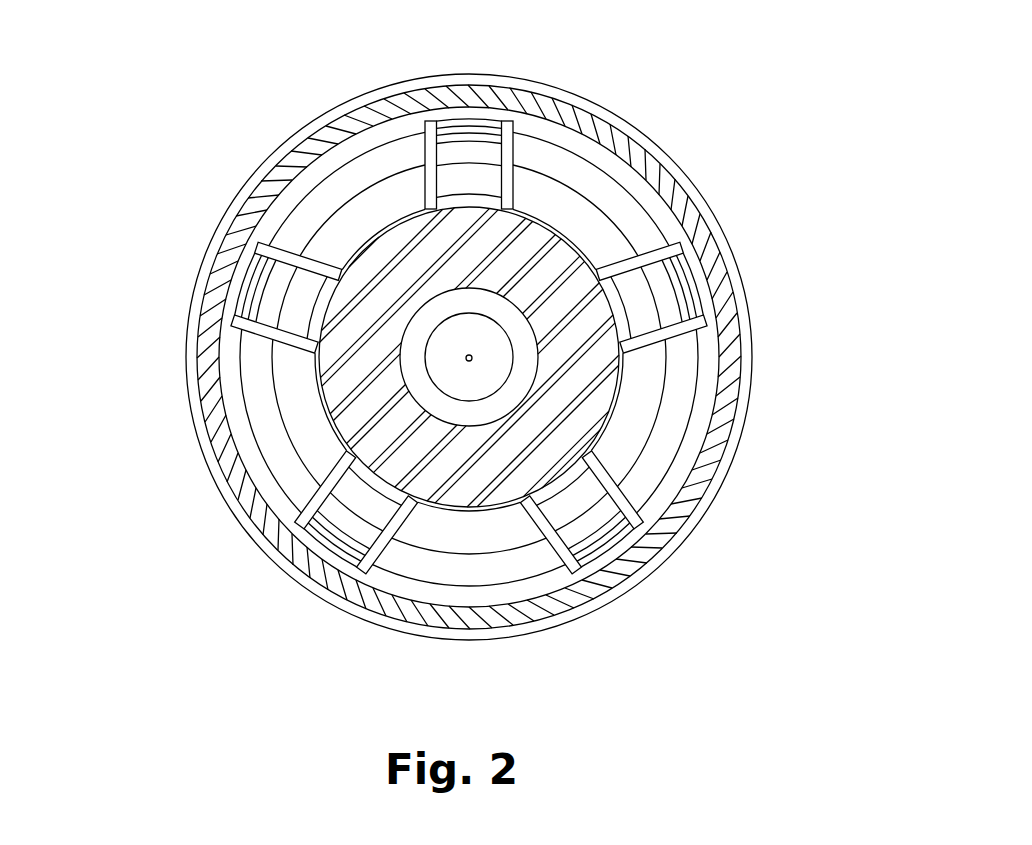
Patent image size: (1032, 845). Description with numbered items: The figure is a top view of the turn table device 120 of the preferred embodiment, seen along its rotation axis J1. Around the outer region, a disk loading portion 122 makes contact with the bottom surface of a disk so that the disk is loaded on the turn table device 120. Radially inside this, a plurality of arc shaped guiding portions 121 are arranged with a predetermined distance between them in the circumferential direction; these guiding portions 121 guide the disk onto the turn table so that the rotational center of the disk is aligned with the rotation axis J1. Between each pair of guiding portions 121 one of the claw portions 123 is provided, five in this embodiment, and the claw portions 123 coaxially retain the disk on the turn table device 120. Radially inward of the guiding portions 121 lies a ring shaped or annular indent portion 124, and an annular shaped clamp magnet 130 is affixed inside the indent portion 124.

The turn table device 120 is at (102, 45).
The arc shaped guiding portion 121 is at (345, 217).
The disk loading portion 122 is at (677, 173).
The claw portion 123 is at (275, 299).
The indent portion 124 is at (337, 422).
The clamp magnet 130 is at (567, 385).
The rotation axis J1 is at (482, 340).